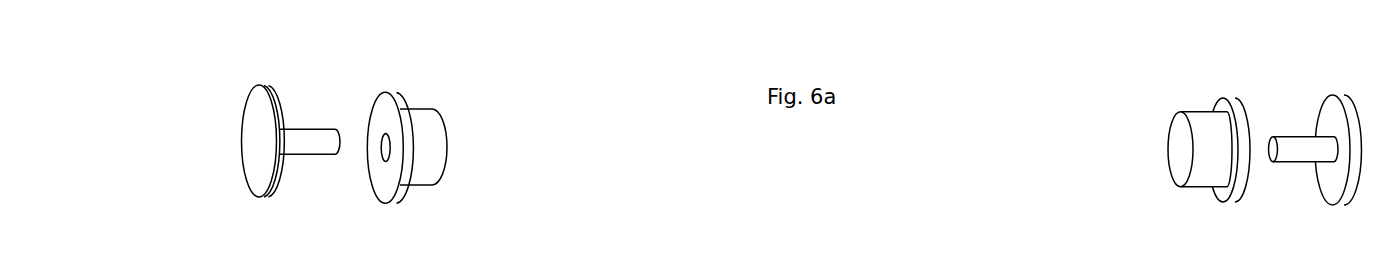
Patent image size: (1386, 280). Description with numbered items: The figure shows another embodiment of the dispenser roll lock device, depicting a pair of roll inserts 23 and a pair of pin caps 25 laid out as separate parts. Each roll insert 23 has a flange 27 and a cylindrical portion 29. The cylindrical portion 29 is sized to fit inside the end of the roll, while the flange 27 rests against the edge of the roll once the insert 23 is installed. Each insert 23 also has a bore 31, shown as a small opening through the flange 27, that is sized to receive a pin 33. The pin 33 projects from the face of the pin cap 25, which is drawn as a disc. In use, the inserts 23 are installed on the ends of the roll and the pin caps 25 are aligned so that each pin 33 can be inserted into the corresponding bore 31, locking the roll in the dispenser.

The roll insert 23 is at (428, 109).
The pin cap 25 is at (247, 102).
The flange 27 is at (1233, 98).
The cylindrical portion 29 is at (1189, 112).
The bore 31 is at (386, 143).
The pin 33 is at (308, 129).